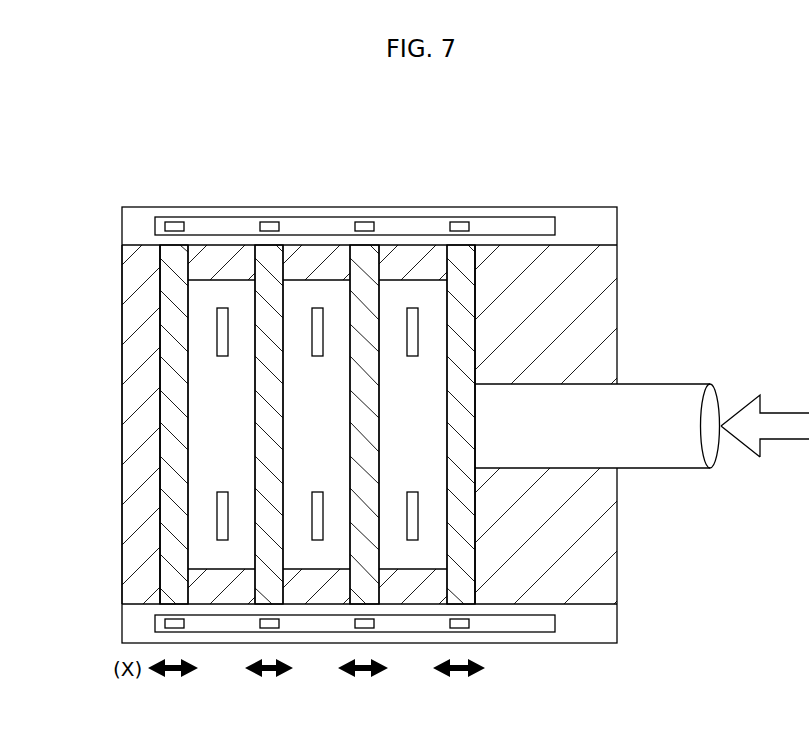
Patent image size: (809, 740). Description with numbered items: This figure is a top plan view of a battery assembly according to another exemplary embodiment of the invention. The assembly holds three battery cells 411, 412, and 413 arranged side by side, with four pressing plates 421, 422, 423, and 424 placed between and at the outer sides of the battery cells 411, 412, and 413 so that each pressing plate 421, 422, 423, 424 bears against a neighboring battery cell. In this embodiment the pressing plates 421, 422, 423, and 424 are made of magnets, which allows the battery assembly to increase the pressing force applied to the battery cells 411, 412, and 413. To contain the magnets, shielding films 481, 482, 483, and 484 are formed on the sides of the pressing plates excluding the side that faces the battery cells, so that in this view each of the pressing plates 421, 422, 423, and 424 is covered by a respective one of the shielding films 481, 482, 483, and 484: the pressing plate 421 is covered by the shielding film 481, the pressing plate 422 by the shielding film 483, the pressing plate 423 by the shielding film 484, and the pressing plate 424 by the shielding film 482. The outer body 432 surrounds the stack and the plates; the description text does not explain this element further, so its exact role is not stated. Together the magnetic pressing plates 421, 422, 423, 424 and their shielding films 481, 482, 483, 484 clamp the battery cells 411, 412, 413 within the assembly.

The battery cell 411 is at (225, 287).
The battery cell 412 is at (316, 287).
The battery cell 413 is at (413, 287).
The pressing plate 421 is at (173, 263).
The pressing plate 422 is at (270, 263).
The pressing plate 423 is at (368, 263).
The pressing plate 424 is at (463, 263).
The housing body 432 is at (142, 418).
The shielding film 481 is at (177, 467).
The shielding film 482 is at (466, 320).
The shielding film 483 is at (272, 400).
The shielding film 484 is at (362, 467).